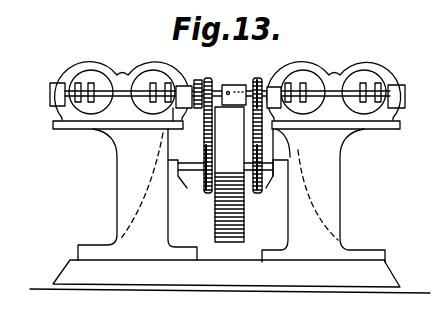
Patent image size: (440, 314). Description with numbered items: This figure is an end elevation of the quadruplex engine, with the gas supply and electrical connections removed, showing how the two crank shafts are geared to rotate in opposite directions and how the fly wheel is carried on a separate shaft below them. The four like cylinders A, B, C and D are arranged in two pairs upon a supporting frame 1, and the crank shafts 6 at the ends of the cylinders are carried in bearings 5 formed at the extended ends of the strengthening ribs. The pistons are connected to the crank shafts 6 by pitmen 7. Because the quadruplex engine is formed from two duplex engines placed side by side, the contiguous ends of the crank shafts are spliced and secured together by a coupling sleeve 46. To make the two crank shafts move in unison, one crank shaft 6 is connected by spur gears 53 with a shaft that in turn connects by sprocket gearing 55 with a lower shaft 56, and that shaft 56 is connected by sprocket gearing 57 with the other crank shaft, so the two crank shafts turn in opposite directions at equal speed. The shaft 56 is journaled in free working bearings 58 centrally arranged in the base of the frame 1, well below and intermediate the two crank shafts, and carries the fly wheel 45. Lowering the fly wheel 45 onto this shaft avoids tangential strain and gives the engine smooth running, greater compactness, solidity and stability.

The supporting frame 1 is at (141, 167).
The bearings 5 is at (50, 97).
The crank shafts 6 is at (227, 108).
The pitmen 7 is at (80, 88).
The fly wheel 45 is at (229, 174).
The coupling sleeve 46 is at (225, 86).
The spur gears 53 is at (198, 80).
The sprocket gearing 55 is at (253, 130).
The shaft 56 is at (273, 164).
The sprocket gearing 57 is at (204, 135).
The bearings 58 is at (180, 182).
The cylinder A is at (91, 66).
The cylinder B is at (154, 67).
The cylinder C is at (305, 68).
The cylinder D is at (367, 68).